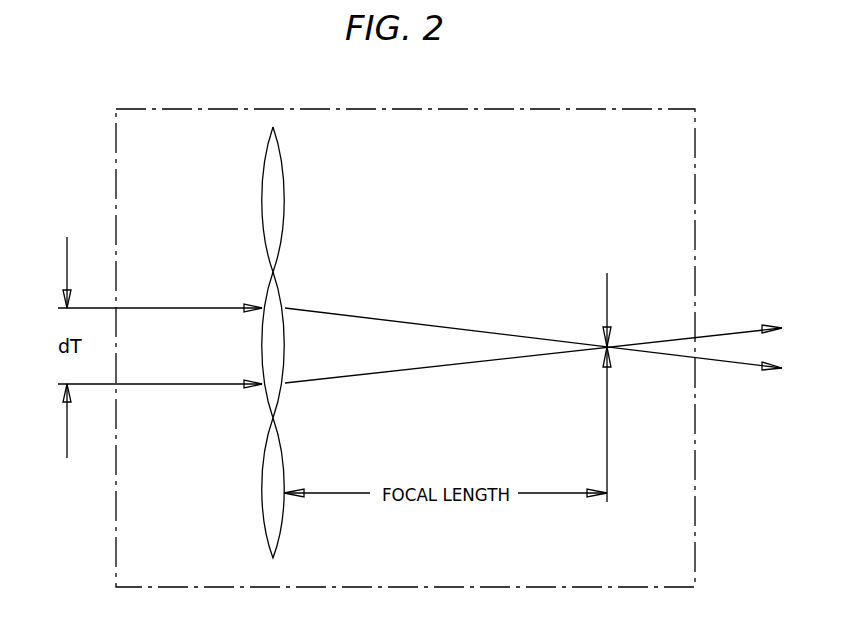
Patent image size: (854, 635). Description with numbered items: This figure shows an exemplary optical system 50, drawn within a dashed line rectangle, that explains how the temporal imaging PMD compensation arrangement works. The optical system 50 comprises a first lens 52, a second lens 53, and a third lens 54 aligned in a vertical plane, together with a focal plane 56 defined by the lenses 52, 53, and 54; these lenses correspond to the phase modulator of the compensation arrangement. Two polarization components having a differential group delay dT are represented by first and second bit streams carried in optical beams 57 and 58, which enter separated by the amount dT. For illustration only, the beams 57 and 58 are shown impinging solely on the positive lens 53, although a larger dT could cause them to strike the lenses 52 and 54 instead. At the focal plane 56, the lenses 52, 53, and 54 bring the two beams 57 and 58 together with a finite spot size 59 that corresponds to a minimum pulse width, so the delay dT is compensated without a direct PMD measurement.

The optical system 50 is at (404, 109).
The first lens 52 is at (285, 197).
The second lens 53 is at (285, 347).
The third lens 54 is at (285, 513).
The focal plane 56 is at (607, 447).
The first optical beam 57 is at (160, 306).
The second optical beam 58 is at (160, 386).
The finite spot size 59 is at (609, 345).